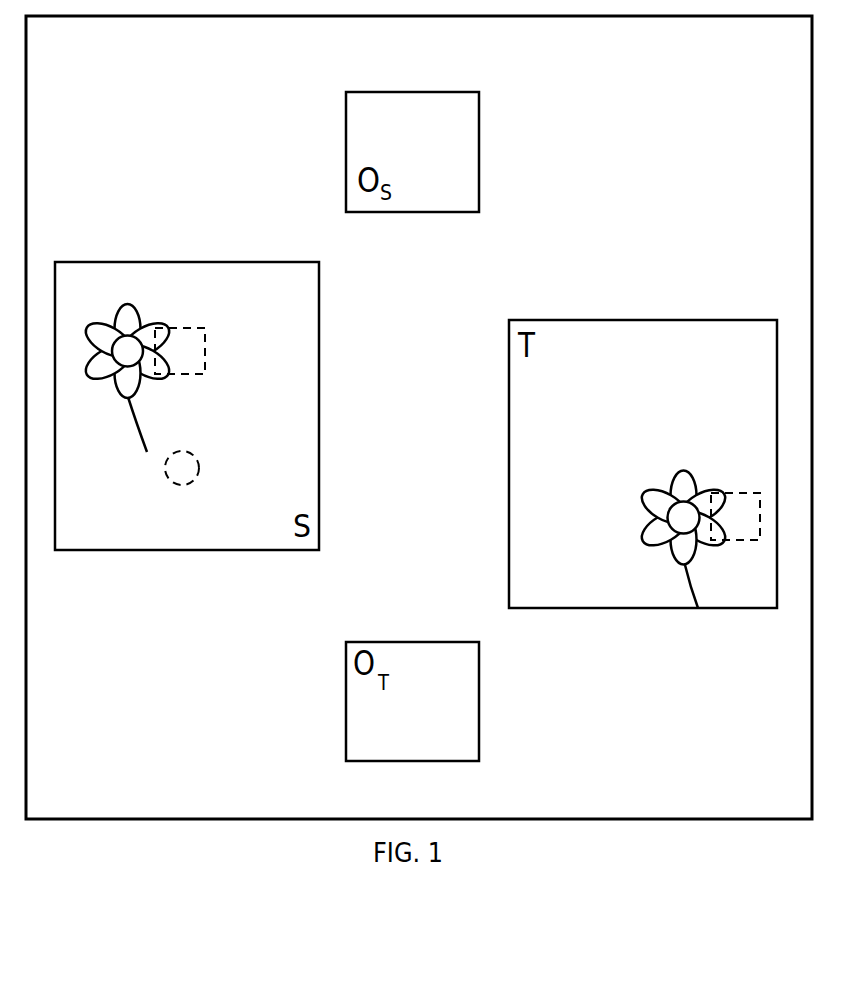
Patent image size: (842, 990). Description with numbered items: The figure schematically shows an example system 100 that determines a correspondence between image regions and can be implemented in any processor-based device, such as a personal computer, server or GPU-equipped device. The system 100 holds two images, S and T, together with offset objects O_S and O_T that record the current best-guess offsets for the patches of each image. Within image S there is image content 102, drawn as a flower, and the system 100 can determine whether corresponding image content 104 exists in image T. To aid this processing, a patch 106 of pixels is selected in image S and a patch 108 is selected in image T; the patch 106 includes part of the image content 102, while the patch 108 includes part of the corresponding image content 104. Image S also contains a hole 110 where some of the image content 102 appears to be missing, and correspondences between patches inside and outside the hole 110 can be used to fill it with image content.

The system 100 is at (799, 805).
The image content 102 is at (134, 418).
The corresponding image content 104 is at (688, 584).
The patch 106 is at (205, 350).
The patch 108 is at (749, 493).
The hole 110 is at (199, 471).